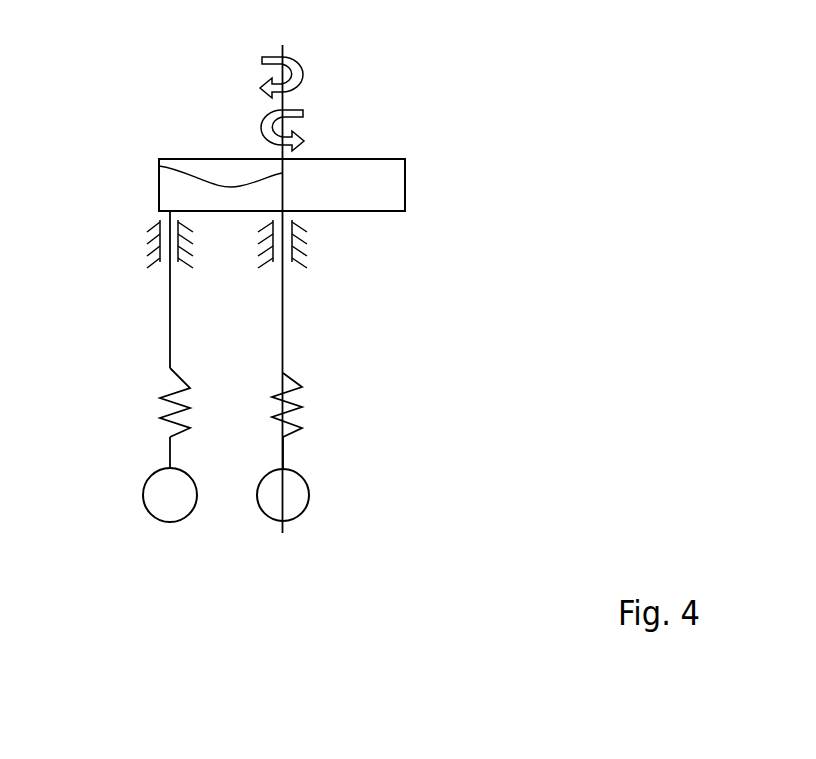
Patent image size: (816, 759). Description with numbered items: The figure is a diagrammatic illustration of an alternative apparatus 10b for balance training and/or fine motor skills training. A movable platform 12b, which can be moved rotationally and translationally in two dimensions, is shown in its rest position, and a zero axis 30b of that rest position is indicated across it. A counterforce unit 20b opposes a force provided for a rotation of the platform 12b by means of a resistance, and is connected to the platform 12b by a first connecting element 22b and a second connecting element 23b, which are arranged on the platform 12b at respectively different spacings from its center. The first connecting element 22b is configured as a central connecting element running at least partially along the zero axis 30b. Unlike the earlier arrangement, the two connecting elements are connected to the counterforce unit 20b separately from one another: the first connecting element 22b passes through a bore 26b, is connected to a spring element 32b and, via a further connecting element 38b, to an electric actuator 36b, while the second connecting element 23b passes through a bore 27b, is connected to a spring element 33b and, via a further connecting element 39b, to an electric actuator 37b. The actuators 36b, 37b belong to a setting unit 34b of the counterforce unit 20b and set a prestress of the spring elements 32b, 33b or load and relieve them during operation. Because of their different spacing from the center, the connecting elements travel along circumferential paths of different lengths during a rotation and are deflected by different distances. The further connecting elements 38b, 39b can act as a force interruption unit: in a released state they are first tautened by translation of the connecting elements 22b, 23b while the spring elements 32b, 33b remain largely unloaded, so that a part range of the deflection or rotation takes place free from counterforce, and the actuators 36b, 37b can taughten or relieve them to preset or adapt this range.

The apparatus 10b is at (185, 142).
The platform 12b is at (368, 170).
The zero axis 30b is at (159, 166).
The first connecting element 22b is at (285, 313).
The second connecting element 23b is at (168, 330).
The bore 26b is at (303, 222).
The bore 27b is at (148, 222).
The spring element 32b is at (297, 408).
The spring element 33b is at (162, 408).
The further connecting element 38b is at (285, 455).
The further connecting element 39b is at (168, 455).
The electric actuator 36b is at (290, 500).
The electric actuator 37b is at (166, 494).
The setting unit 34b is at (211, 528).
The counterforce unit 20b is at (242, 528).